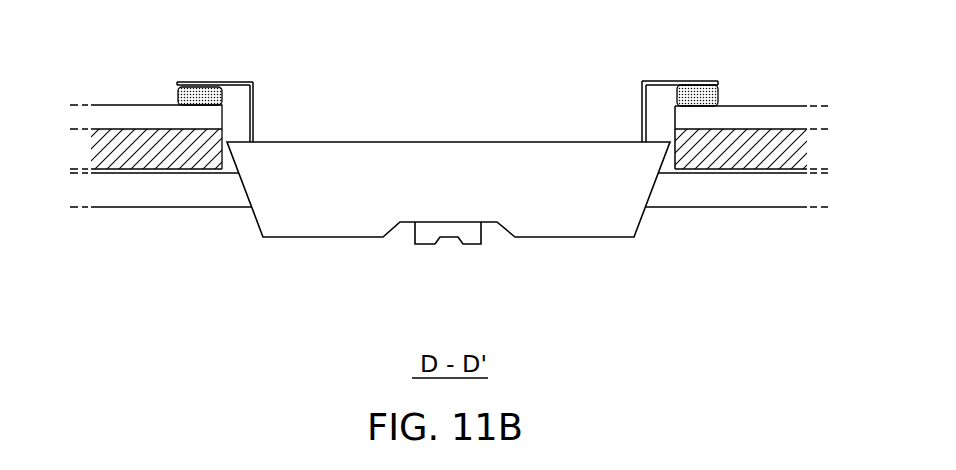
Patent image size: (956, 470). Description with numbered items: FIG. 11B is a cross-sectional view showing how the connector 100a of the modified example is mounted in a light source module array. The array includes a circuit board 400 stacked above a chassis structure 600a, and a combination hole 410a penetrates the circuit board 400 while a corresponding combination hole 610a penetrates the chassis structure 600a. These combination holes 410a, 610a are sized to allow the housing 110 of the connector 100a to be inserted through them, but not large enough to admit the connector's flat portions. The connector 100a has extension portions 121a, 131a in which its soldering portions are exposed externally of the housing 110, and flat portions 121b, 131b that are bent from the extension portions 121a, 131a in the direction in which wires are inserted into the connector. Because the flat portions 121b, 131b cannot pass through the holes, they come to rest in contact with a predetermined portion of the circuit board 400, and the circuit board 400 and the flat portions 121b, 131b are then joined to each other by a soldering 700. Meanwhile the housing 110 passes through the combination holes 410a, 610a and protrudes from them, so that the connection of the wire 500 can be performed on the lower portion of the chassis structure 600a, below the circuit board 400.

The housing 110 is at (457, 155).
The connector 100a is at (462, 263).
The circuit board 400 is at (786, 107).
The combination hole 410a is at (672, 110).
The chassis structure 600a is at (762, 158).
The combination hole 610a is at (665, 174).
The wire 500 is at (152, 194).
The extension portion 121a is at (257, 91).
The flat portion 121b is at (229, 82).
The extension portion 131a is at (640, 91).
The flat portion 131b is at (688, 81).
The soldering 700 is at (177, 93).